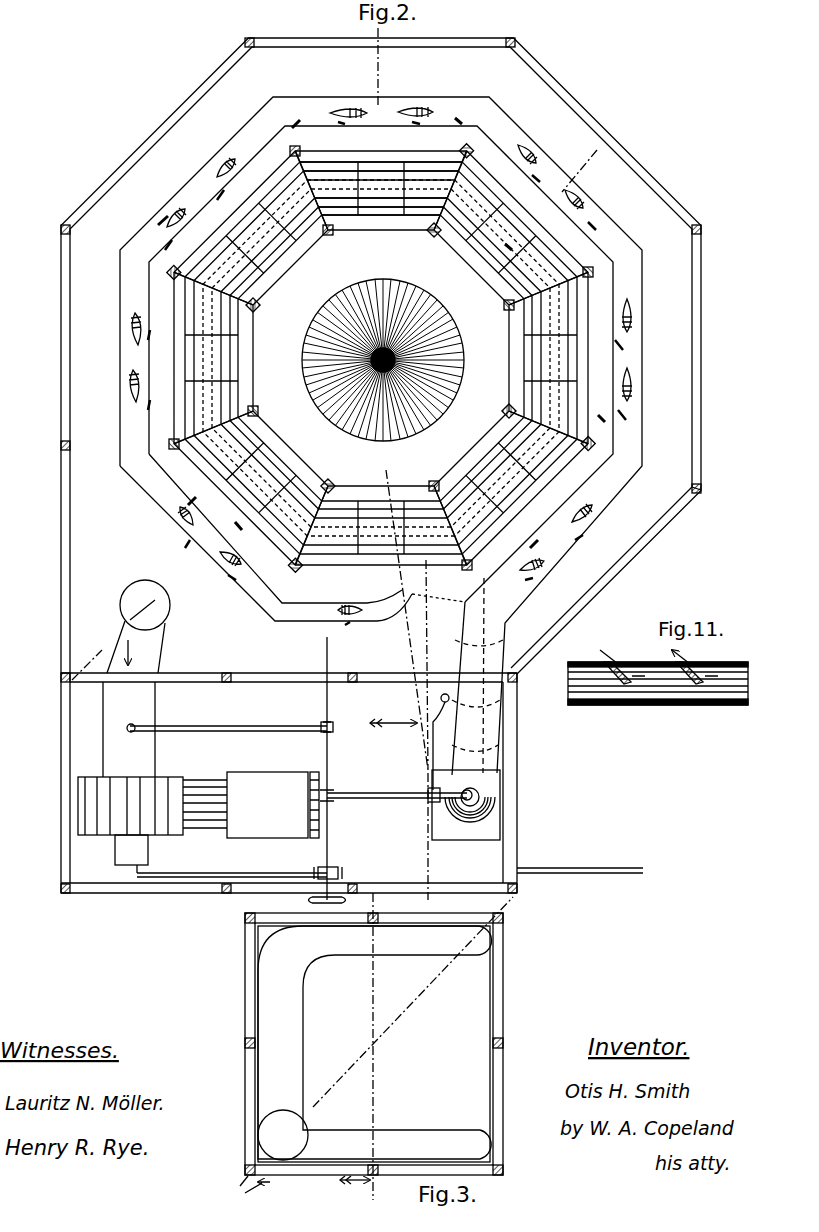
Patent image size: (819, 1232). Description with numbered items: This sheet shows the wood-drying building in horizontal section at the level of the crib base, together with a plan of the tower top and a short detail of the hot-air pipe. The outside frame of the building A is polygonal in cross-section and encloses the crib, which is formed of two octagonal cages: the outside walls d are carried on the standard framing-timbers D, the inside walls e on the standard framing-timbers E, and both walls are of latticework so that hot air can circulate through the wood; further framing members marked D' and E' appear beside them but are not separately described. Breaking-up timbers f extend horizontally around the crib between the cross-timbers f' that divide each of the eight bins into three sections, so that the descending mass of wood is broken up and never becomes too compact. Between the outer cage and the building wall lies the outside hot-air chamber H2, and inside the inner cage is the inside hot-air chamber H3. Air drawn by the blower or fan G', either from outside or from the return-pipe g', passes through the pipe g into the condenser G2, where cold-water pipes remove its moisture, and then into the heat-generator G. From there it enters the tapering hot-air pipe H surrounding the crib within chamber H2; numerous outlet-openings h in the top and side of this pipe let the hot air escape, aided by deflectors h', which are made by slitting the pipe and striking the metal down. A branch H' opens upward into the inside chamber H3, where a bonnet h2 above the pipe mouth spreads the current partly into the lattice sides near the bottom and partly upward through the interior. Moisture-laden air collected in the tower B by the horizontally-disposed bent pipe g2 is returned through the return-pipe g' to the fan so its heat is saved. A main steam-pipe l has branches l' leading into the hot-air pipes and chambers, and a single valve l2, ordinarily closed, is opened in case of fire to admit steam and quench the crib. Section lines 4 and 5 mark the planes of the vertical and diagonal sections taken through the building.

In FIG. 2, the outside frame of the building A is at (381, 465).
In FIG. 3, the tower B is at (500, 1010).
In FIG. 2, the standard framing-timbers of the outside walls D is at (382, 360).
In FIG. 2, the frame plate D' is at (381, 360).
In FIG. 2, the standard framing-timbers of the inside walls E is at (392, 298).
In FIG. 2, the damper slat E' is at (360, 329).
In FIG. 2, the heat-generator G is at (500, 805).
In FIG. 2, the blower G' is at (130, 821).
In FIG. 2, the condenser G2 is at (273, 805).
In FIG. 2, the hot-air pipe H is at (371, 436).
In FIG. 11, the hot-air pipe H is at (658, 700).
In FIG. 2, the branch of the hot-air pipe H' is at (409, 739).
In FIG. 2, the outside hot-air chamber H2 is at (640, 512).
In FIG. 2, the inside hot-air chamber H3 is at (397, 360).
In FIG. 2, the outside walls of the crib d is at (300, 215).
In FIG. 2, the inside walls of the crib e is at (340, 228).
In FIG. 2, the breaking-up timbers f is at (395, 372).
In FIG. 2, the cross-timbers f' is at (415, 265).
In FIG. 2, the pipe g is at (246, 782).
In FIG. 2, the return-pipe g' is at (146, 678).
In FIG. 3, the return-pipe g' is at (283, 1135).
In FIG. 3, the bent pipe g2 is at (375, 1055).
In FIG. 2, the outlet-openings h is at (400, 374).
In FIG. 11, the outlet-openings h is at (672, 653).
In FIG. 2, the deflectors h' is at (408, 344).
In FIG. 11, the deflectors h' is at (657, 707).
In FIG. 2, the bonnet h2 is at (383, 360).
In FIG. 2, the main steam-pipe l is at (485, 830).
In FIG. 2, the branch steam-pipes l' is at (252, 770).
In FIG. 2, the valve l2 is at (340, 870).
In FIG. 2, the section line 4 4 is at (406, 464).
In FIG. 3, the section line 4 4 is at (376, 1044).
In FIG. 2, the section line 5 5 is at (600, 128).
In FIG. 3, the section line 5 5 is at (370, 1050).